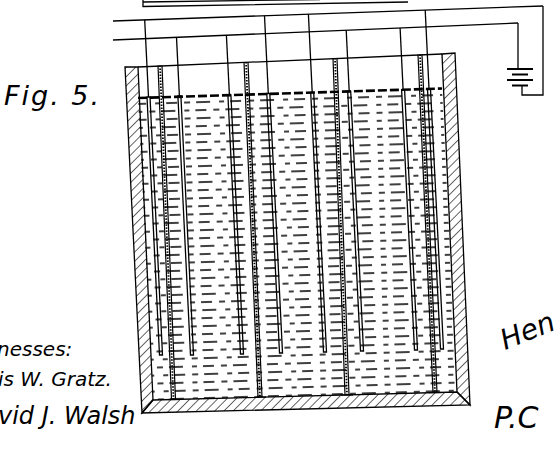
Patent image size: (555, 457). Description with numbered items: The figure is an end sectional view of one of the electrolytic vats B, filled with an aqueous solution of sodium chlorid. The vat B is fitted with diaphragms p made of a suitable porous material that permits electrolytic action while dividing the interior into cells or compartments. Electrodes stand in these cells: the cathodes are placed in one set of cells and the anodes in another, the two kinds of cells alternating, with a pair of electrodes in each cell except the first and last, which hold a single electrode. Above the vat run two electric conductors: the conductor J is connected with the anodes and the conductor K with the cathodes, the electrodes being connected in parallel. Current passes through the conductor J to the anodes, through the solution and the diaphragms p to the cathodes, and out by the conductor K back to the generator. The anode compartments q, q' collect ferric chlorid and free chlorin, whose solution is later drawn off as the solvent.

The electric conductor J is at (113, 21).
The electric conductor K is at (113, 40).
The diaphragm p is at (157, 231).
The electrolytic vat B is at (463, 240).
The anode compartment q is at (315, 245).
The anode compartment q' is at (299, 227).